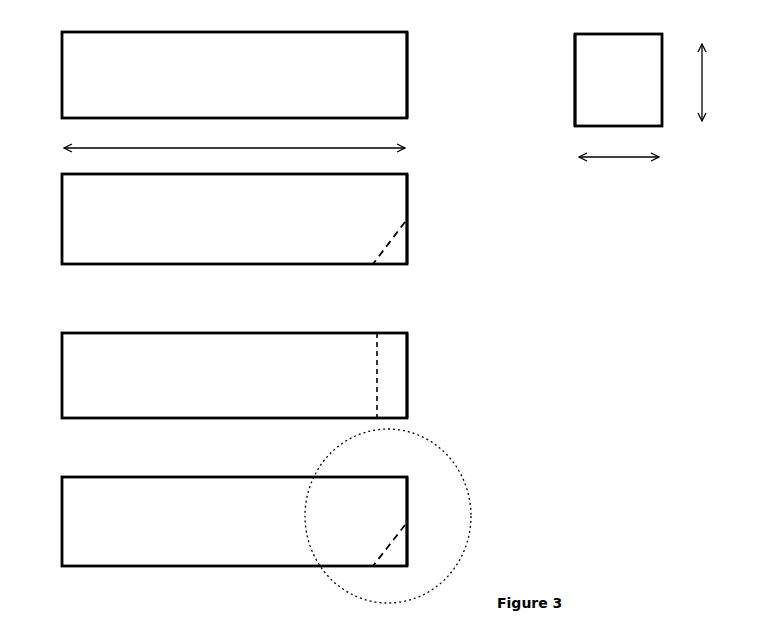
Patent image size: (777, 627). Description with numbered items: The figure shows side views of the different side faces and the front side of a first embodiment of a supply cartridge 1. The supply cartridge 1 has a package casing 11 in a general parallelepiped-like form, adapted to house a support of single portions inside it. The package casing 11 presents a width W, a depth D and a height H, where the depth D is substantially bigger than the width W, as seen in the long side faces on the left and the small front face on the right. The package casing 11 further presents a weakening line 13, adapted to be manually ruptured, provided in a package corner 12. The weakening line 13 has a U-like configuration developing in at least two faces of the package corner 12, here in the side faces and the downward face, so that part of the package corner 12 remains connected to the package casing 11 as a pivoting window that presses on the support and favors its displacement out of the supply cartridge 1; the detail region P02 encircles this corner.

The supply cartridge 1 is at (220, 299).
The package casing 11 is at (534, 79).
The package corner 12 is at (569, 125).
The weakening line 13 is at (380, 252).
The depth D is at (234, 139).
The height H is at (716, 82).
The width W is at (619, 147).
The detail region P02 is at (403, 516).